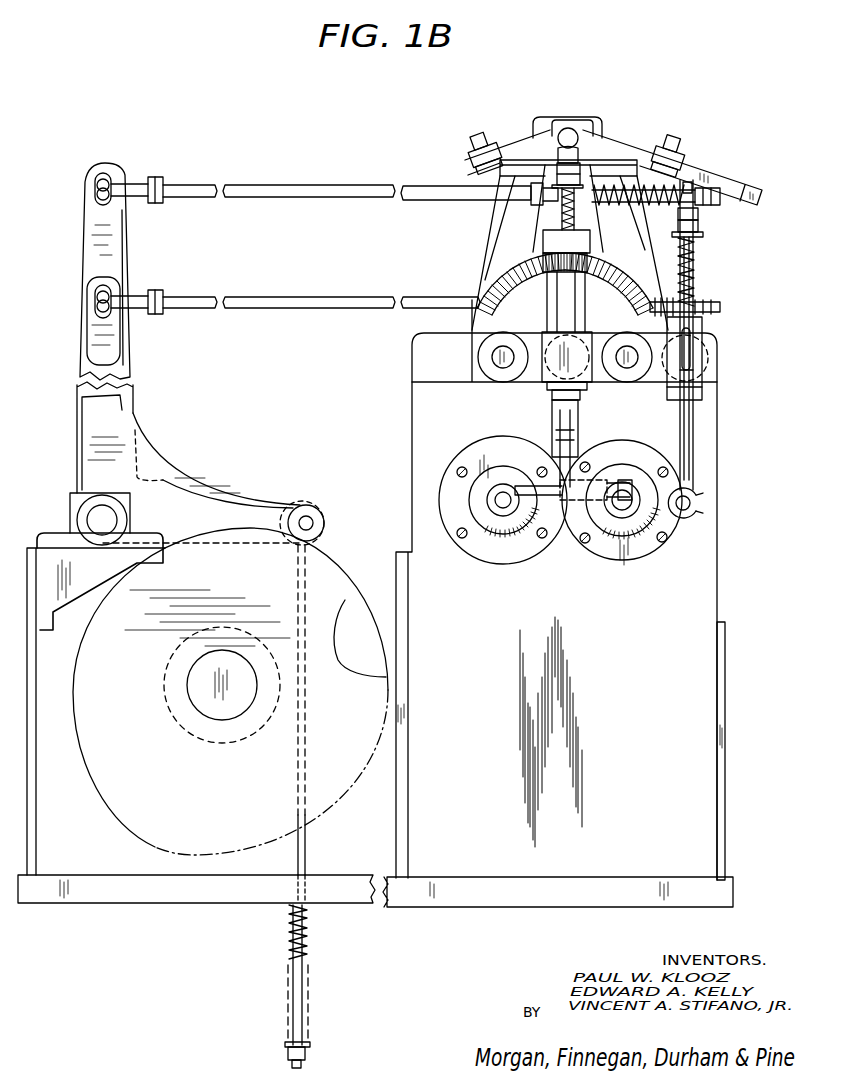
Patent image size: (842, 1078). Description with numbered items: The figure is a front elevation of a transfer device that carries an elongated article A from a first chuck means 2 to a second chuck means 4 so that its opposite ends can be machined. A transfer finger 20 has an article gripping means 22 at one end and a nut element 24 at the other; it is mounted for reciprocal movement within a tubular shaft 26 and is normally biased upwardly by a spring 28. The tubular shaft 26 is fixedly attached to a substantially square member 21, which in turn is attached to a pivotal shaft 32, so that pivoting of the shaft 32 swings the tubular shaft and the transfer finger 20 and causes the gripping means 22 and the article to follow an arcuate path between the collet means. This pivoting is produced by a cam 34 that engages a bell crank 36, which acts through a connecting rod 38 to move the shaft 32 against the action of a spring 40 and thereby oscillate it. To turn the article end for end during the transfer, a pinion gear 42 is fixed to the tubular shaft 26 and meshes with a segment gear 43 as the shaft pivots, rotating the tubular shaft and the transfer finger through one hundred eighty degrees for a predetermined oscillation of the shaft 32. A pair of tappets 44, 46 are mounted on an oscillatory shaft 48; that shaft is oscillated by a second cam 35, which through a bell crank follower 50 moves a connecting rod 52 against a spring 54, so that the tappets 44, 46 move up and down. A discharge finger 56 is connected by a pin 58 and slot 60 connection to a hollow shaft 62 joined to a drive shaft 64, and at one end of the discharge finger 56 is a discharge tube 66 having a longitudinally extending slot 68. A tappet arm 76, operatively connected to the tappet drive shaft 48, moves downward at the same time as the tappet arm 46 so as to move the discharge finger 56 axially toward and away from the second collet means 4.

The first chuck means 2 is at (486, 479).
The second chuck means 4 is at (641, 481).
The transfer finger 20 is at (540, 426).
The square member 21 is at (585, 343).
The article gripping means 22 is at (538, 465).
The nut element 24 is at (540, 140).
The tubular shaft 26 is at (542, 315).
The spring 28 is at (593, 198).
The pivotal shaft 32 is at (587, 385).
The cam 34 is at (323, 568).
The cam 35 is at (362, 625).
The bell crank 36 is at (148, 462).
The connecting rod 38 is at (342, 282).
The spring 40 is at (660, 290).
The pinion gear 42 is at (597, 267).
The segment gear 43 is at (500, 277).
The tappet 44 is at (470, 155).
The tappet 46 is at (662, 158).
The oscillatory shaft 48 is at (571, 136).
The bell crank follower 50 is at (88, 201).
The connecting rod 52 is at (342, 166).
The spring 54 is at (603, 207).
The discharge finger 56 is at (706, 429).
The pin 58 is at (684, 370).
The slot 60 is at (683, 337).
The hollow shaft 62 is at (697, 348).
The drive shaft 64 is at (705, 359).
The discharge tube 66 is at (706, 495).
The slot 68 is at (699, 503).
The tappet arm 76 is at (727, 184).
The elongated article A is at (625, 487).